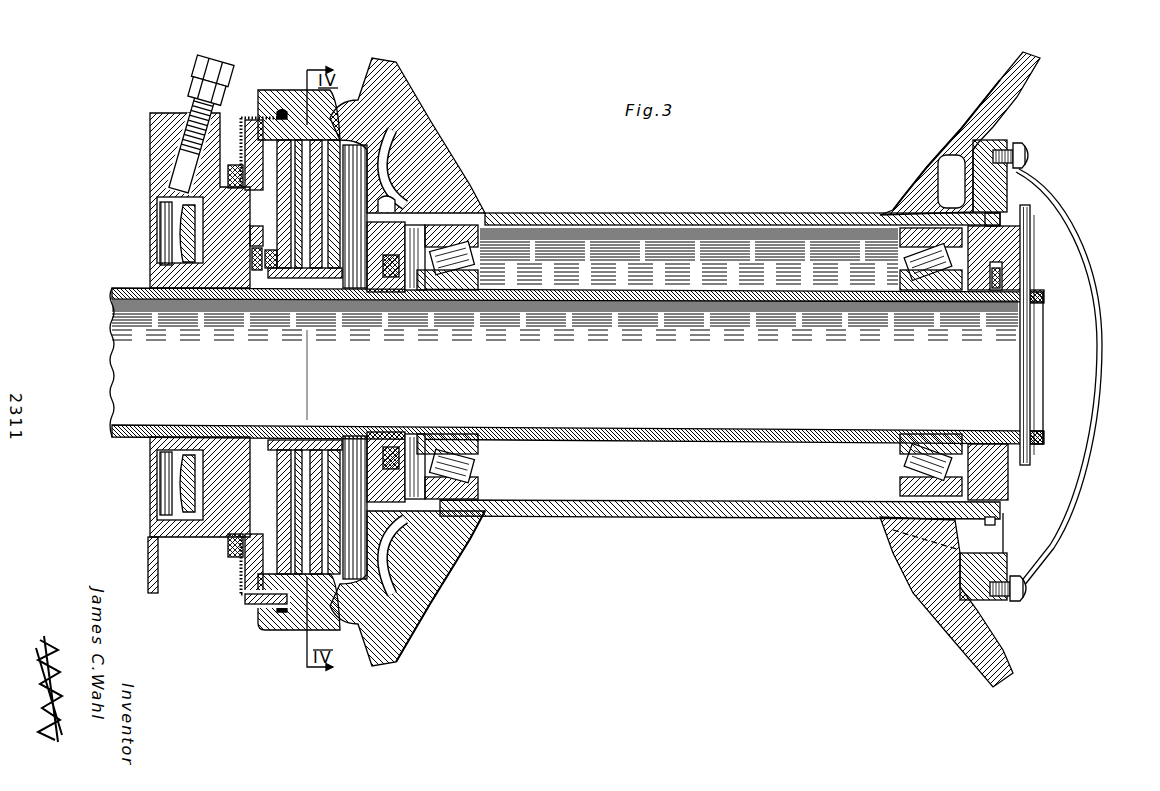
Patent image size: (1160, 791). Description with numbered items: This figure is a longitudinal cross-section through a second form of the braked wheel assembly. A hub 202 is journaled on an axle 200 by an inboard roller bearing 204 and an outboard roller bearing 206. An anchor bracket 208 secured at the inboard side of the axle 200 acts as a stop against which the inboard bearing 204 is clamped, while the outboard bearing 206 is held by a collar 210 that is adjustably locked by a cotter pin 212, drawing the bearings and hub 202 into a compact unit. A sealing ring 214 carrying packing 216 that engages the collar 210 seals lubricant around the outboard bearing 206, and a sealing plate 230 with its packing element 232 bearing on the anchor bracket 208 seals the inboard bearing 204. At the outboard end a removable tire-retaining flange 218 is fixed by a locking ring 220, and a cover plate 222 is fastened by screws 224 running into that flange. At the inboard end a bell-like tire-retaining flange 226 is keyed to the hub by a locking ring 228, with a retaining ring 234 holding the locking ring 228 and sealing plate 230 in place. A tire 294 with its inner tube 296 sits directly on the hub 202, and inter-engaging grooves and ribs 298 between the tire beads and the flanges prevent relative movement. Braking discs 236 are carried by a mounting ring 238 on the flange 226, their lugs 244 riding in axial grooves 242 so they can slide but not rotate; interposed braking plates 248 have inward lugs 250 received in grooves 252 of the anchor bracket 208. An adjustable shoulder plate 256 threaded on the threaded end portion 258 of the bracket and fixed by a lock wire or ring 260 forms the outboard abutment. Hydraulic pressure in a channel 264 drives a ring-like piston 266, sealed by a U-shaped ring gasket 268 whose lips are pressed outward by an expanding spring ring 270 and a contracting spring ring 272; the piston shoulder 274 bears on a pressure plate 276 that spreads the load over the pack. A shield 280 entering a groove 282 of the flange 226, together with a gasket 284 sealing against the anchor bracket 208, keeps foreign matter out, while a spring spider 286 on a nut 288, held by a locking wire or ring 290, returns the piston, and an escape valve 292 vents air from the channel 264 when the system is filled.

The axle 200 is at (597, 430).
The hub 202 is at (775, 214).
The inboard roller bearing 204 is at (447, 272).
The outboard roller bearing 206 is at (930, 292).
The anchor bracket 208 is at (148, 277).
The collar 210 is at (1033, 448).
The cotter pin 212 is at (1030, 391).
The sealing ring 214 is at (1008, 250).
The packing 216 is at (1000, 285).
The removable tire-retaining flange 218 is at (998, 196).
The locking ring 220 is at (995, 222).
The cover plate 222 is at (1048, 543).
The screws 224 is at (1025, 597).
The bell-like tire-retaining flange 226 is at (400, 150).
The locking ring 228 is at (395, 202).
The sealing plate 230 is at (410, 445).
The packing element 232 is at (387, 447).
The retaining ring 234 is at (397, 140).
The braking discs 236 is at (312, 278).
The mounting ring 238 is at (350, 612).
The grooves 242 is at (306, 595).
The lugs 244 is at (316, 582).
The braking plates 248 is at (300, 450).
The lugs 250 is at (320, 450).
The grooves 252 is at (272, 450).
The shoulder plate 256 is at (350, 278).
The threaded end portion 258 is at (388, 282).
The lock wire or ring 260 is at (432, 585).
The channel 264 is at (153, 507).
The piston 266 is at (215, 520).
The ring gasket 268 is at (182, 462).
The expanding spring ring 270 is at (183, 213).
The contracting spring ring 272 is at (182, 257).
The shoulder 274 is at (277, 590).
The pressure plate 276 is at (257, 615).
The shield 280 is at (272, 110).
The groove 282 is at (284, 112).
The gasket 284 is at (233, 163).
The spring spider 286 is at (243, 262).
The nut 288 is at (256, 270).
The locking wire or ring 290 is at (271, 268).
The escape valve 292 is at (180, 113).
The tire 294 is at (1023, 102).
The inner tube 296 is at (975, 108).
The inter-engaging grooves and ribs 298 is at (937, 200).